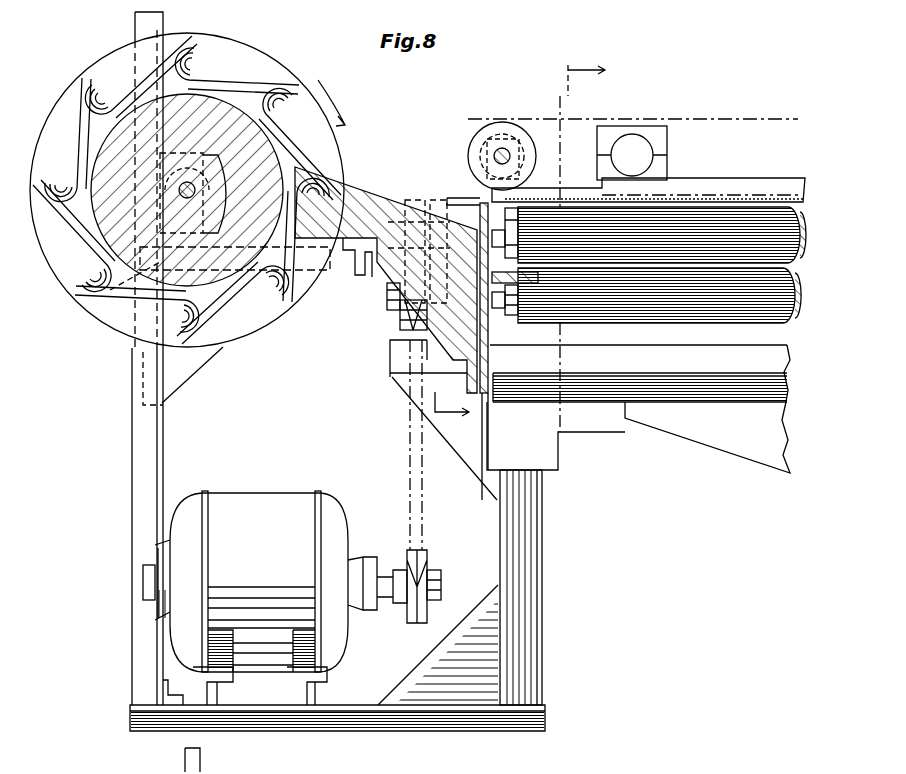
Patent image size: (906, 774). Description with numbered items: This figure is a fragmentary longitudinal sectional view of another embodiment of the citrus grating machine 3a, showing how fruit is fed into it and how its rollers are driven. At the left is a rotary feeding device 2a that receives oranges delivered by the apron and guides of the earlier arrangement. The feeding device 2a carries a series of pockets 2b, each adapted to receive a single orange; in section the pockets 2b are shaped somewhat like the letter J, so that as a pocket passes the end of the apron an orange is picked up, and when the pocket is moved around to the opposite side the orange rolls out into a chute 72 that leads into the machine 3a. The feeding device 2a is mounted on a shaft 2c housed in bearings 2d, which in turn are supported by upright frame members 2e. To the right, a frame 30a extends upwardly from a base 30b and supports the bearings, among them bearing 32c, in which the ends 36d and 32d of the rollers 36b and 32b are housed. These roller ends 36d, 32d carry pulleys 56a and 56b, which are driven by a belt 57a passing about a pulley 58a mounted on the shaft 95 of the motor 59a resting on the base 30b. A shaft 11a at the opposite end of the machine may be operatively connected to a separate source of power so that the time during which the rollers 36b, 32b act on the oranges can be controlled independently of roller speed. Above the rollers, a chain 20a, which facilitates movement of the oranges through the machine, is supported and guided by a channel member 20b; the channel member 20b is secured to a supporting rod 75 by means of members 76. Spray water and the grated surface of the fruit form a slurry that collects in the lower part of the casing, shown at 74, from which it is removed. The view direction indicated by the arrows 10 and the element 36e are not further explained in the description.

The feeding device 2a is at (202, 31).
The pockets 2b is at (233, 55).
The shaft 2c is at (182, 190).
The bearings 2d is at (110, 290).
The upright frame members 2e is at (140, 443).
The chute 72 is at (350, 190).
The pulley 56a is at (400, 193).
The mounting plate 36e is at (453, 203).
The shaft 11a is at (500, 150).
The roller end 36d is at (497, 227).
The viewing direction arrow 10 is at (529, 241).
The supporting rod 75 is at (623, 148).
The members 76 is at (653, 135).
The machine 3a is at (699, 103).
The chain 20a is at (767, 120).
The channel member 20b is at (762, 173).
The roller 36b is at (657, 223).
The roller 32b is at (672, 315).
The roller end 32d is at (498, 297).
The lower part of the casing 74 is at (740, 452).
The bearing 32c is at (400, 320).
The pulley 56b is at (405, 323).
The belt 57a is at (422, 515).
The pulley 58a is at (427, 567).
The shaft 95 is at (442, 580).
The motor 59a is at (273, 508).
The frame 30a is at (535, 572).
The base 30b is at (545, 718).